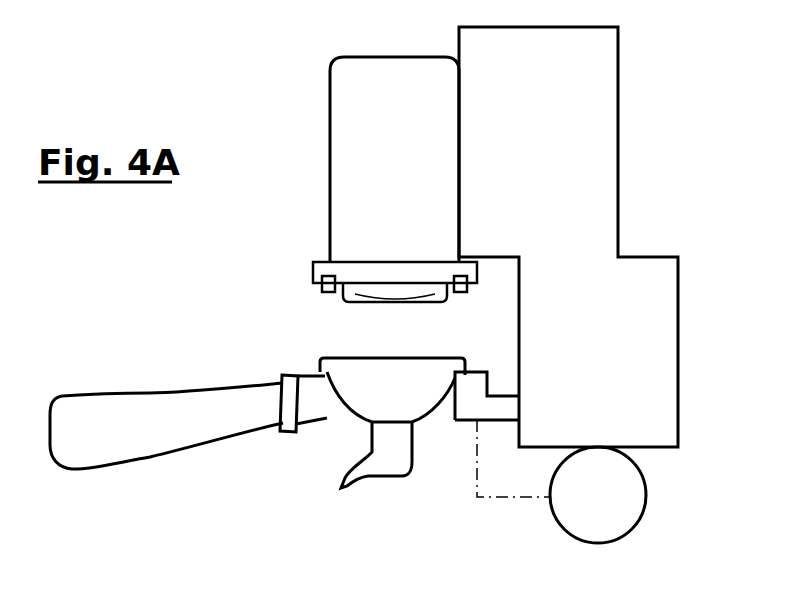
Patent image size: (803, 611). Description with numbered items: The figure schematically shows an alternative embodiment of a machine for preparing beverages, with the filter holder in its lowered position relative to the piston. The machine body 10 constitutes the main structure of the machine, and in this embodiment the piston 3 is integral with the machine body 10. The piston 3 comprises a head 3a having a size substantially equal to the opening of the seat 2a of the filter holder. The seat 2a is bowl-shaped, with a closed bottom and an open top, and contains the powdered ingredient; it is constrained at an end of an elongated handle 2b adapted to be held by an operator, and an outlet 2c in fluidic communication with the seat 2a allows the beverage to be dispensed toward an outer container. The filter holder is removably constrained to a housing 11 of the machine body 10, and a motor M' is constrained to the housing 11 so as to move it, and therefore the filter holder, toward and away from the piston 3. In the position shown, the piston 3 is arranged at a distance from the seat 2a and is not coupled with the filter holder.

The seat 2a is at (355, 358).
The handle 2b is at (127, 408).
The outlet 2c is at (353, 478).
The piston 3 is at (364, 132).
The head 3a is at (322, 262).
The machine body 10 is at (607, 128).
The housing 11 is at (462, 410).
The motor M' is at (639, 495).